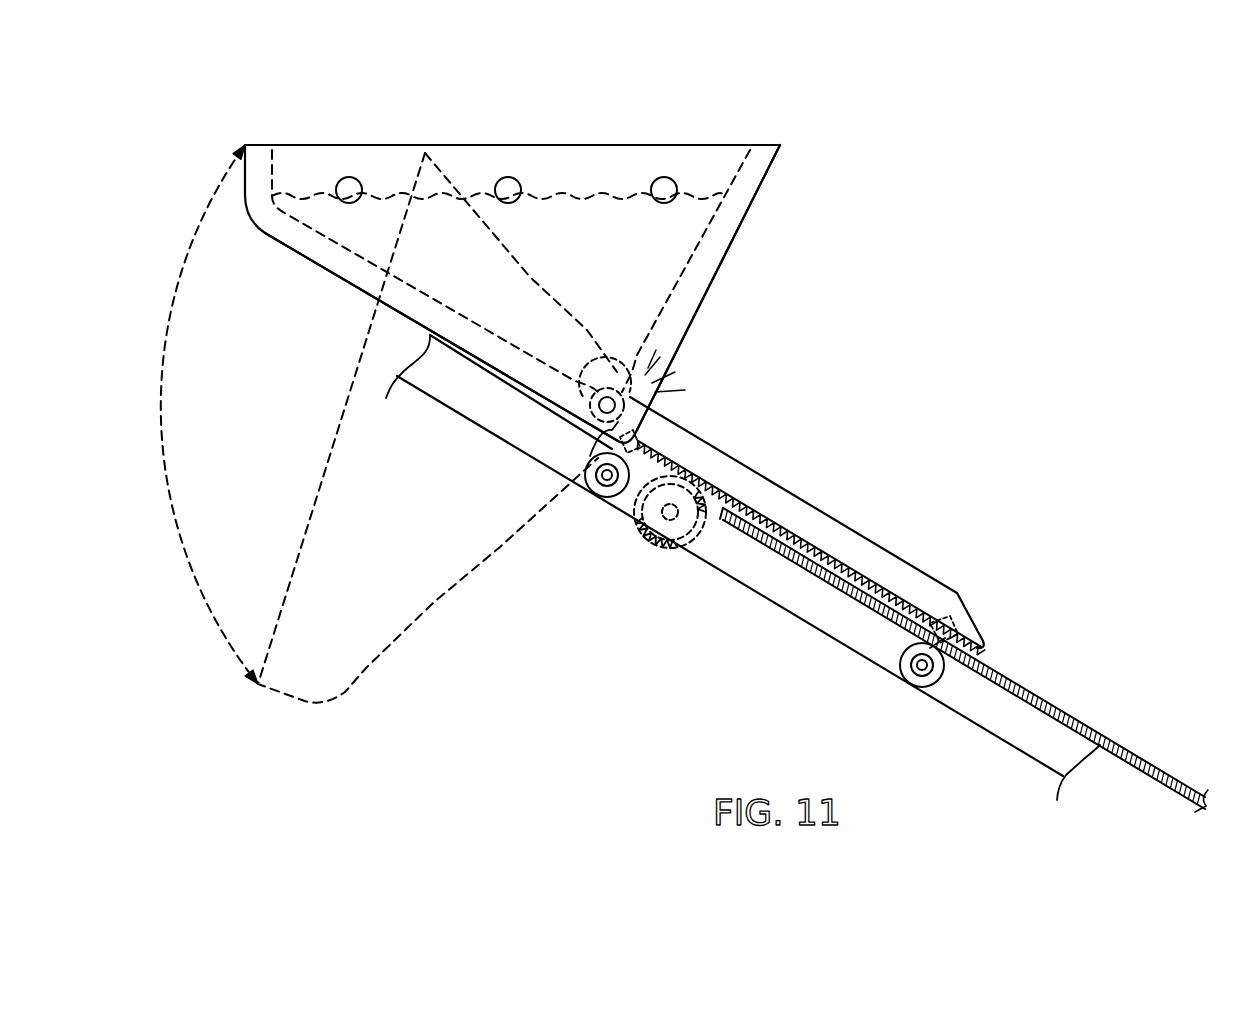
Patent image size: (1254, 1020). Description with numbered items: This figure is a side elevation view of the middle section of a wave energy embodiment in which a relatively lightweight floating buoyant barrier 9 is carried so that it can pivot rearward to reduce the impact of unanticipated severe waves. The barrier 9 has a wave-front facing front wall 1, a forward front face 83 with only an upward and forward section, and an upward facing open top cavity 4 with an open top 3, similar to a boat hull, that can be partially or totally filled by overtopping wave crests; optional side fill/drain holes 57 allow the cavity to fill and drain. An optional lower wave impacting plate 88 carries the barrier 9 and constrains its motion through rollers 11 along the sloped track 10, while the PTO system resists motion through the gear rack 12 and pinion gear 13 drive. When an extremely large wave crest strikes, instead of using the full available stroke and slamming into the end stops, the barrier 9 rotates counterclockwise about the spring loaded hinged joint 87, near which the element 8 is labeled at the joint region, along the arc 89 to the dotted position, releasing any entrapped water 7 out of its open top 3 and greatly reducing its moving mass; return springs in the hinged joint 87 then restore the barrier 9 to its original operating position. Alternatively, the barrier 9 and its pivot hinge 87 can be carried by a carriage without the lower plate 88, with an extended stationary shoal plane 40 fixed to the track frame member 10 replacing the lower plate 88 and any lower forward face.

The front wall 1 is at (455, 590).
The top 3 is at (425, 153).
The open top cavity 4 is at (553, 222).
The entrapped water 7 is at (318, 190).
The pivot joint 8 is at (646, 367).
The buoyant barrier 9 is at (708, 252).
The sloped track 10 is at (460, 410).
The rollers 11 is at (606, 497).
The gear rack 12 is at (868, 578).
The pinion gear 13 is at (660, 546).
The shoal plane 40 is at (1122, 747).
The side fill/drain holes 57 is at (351, 186).
The front face 83 is at (700, 302).
The spring loaded hinged joint 87 is at (615, 405).
The lower wave impacting plate 88 is at (780, 498).
The arc 89 is at (167, 398).